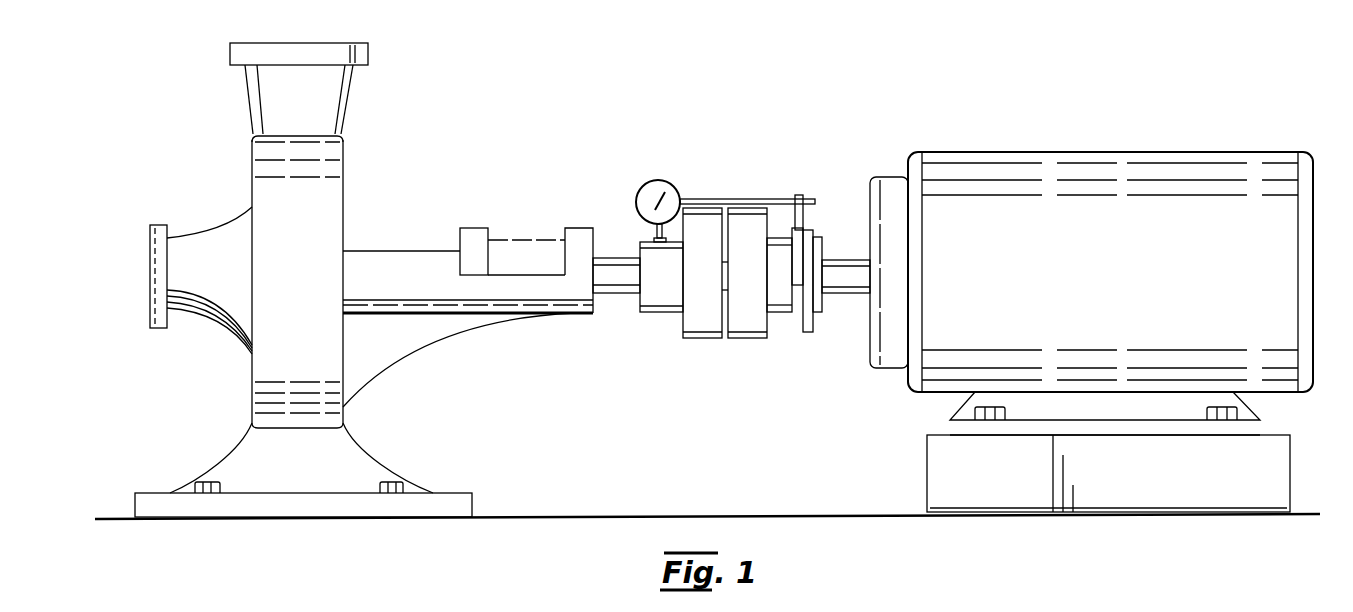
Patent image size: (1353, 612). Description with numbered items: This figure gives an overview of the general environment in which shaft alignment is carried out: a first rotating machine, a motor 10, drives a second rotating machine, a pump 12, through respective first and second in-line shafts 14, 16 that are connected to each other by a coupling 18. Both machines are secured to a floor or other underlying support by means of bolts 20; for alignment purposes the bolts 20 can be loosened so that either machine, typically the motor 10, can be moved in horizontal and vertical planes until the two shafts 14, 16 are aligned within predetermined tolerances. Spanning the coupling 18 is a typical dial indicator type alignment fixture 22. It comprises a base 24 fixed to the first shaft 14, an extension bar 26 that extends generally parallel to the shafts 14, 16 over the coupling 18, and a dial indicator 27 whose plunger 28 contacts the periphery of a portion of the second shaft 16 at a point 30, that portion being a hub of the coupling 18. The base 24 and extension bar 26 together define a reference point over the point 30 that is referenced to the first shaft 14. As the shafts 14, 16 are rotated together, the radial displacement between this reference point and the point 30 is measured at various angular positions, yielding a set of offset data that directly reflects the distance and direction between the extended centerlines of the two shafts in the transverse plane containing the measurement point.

The motor 10 is at (1035, 170).
The pump 12 is at (335, 185).
The first shaft 14 is at (847, 278).
The second shaft 16 is at (612, 287).
The coupling 18 is at (715, 343).
The bolts 20 is at (390, 480).
The alignment fixture 22 is at (800, 182).
The base 24 is at (800, 236).
The extension bar 26 is at (722, 200).
The dial indicator 27 is at (648, 185).
The plunger 28 is at (648, 227).
The point 30 is at (672, 243).